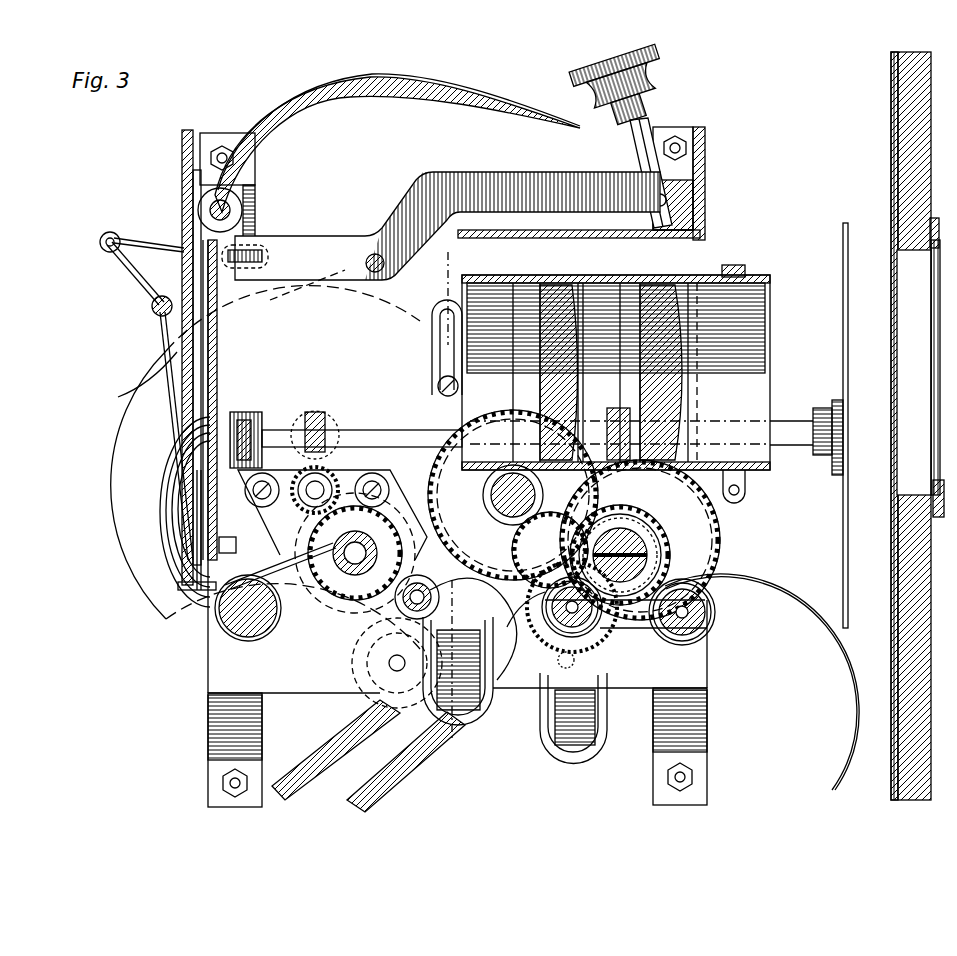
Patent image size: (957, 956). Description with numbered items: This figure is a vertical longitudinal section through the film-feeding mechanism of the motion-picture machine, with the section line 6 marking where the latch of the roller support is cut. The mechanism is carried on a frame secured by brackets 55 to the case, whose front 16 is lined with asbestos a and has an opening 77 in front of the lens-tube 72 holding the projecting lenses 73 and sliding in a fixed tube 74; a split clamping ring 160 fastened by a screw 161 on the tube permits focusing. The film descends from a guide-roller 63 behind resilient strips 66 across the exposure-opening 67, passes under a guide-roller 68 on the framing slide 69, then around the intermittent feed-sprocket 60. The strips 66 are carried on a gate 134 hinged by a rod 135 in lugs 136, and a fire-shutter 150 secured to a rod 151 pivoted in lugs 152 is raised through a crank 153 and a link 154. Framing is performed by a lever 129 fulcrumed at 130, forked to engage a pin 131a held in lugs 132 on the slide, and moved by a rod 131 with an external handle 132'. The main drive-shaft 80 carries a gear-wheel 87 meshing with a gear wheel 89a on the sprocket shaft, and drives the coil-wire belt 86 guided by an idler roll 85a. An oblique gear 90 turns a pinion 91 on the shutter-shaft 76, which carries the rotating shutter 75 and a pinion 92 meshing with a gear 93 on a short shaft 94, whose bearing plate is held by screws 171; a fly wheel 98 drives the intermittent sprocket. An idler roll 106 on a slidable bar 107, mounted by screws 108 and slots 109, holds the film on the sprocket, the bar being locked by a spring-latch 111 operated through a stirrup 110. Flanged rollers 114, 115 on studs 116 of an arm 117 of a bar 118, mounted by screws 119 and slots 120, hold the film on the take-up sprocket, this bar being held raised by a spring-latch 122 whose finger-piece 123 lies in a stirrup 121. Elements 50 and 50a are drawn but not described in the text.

The section line 6— 6 is at (448, 499).
The front of the case 16 is at (900, 138).
The asbestos lining a is at (894, 176).
The arcuate guide 50 is at (855, 688).
The curved blade arm 50a is at (447, 97).
The brackets 55 is at (702, 214).
The intermittent feed-sprocket 60 is at (336, 593).
The guide-roller 63 is at (230, 212).
The resilient pressure strips 66 is at (206, 365).
The exposure-opening 67 is at (218, 389).
The guide-roller 68 is at (246, 640).
The framing slide 69 is at (236, 549).
The lens-tube 72 is at (760, 368).
The projecting lenses 73 is at (650, 370).
The fixed tube 74 is at (470, 278).
The rotating shutter 75 is at (843, 302).
The shutter-shaft 76 is at (796, 448).
The opening 77 is at (918, 367).
The main drive-shaft 80 is at (507, 512).
The idler roll 85a is at (380, 704).
The spring or coil-wire belt 86 is at (372, 792).
The gear-wheel 87 is at (513, 495).
The gear wheel 89a is at (642, 540).
The oblique-toothed gear 90 is at (722, 547).
The oblique toothed pinion 91 is at (612, 420).
The oblique toothed pinion 92 is at (315, 412).
The oblique toothed gear 93 is at (360, 432).
The short shaft 94 is at (330, 425).
The fly wheel 98 is at (113, 450).
The idler roll 106 is at (408, 606).
The slidable bar 107 is at (470, 615).
The screws 108 is at (440, 382).
The slots 109 is at (440, 323).
The stirrup 110 is at (486, 693).
The spring-latch 111 is at (470, 723).
The flanged roller 114 is at (712, 622).
The flanged roller 115 is at (592, 642).
The studs 116 is at (688, 632).
The arm 117 is at (625, 616).
The slidable bar 118 is at (550, 550).
The screws 119 is at (556, 663).
The slots 120 is at (548, 642).
The stirrup 121 is at (558, 749).
The spring-latch 122 is at (598, 736).
The finger-piece 123 is at (578, 747).
The lever 129 is at (447, 226).
The fulcrum 130 is at (372, 255).
The rod 131 is at (661, 127).
The pin 131a is at (256, 250).
The lugs 132 is at (285, 285).
The handle 132' is at (642, 89).
The gate 134 is at (182, 492).
The rod 135 is at (192, 512).
The lugs 136 is at (182, 233).
The fire-shutter 150 is at (126, 380).
The rod 151 is at (150, 308).
The lugs 152 is at (163, 296).
The crank 153 is at (125, 270).
The link 154 is at (148, 247).
The split clamping ring 160 is at (738, 266).
The screw 161 is at (747, 492).
The screws 171 is at (394, 471).